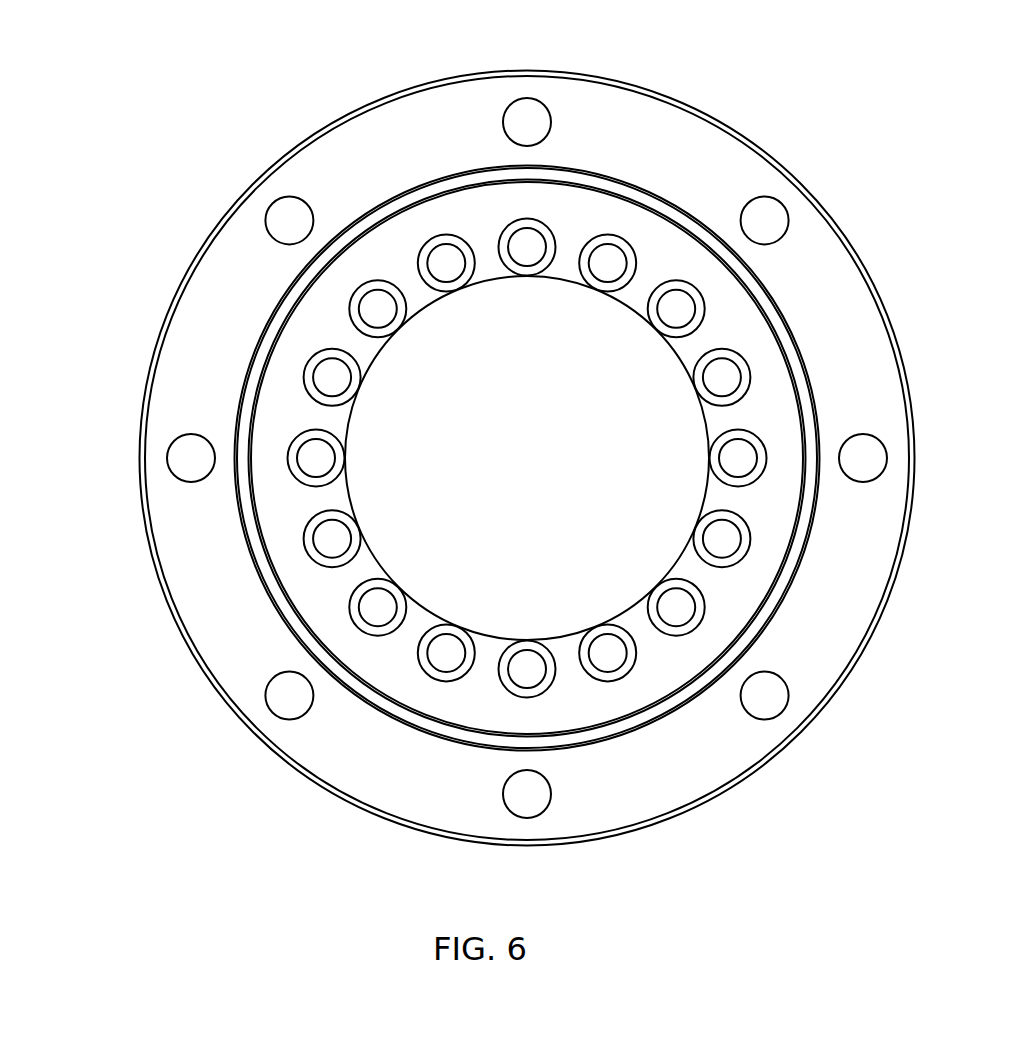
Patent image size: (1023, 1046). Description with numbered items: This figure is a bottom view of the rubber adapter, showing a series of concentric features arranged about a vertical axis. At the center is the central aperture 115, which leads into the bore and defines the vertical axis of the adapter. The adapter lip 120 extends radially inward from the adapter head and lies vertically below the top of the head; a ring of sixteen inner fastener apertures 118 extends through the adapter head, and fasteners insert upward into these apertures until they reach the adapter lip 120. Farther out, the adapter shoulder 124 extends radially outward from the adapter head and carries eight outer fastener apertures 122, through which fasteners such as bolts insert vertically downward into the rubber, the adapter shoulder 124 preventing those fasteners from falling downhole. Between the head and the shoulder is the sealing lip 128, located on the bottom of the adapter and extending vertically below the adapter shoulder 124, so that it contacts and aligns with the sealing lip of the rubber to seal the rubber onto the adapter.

The central aperture 115 is at (455, 382).
The inner fastener apertures 118 is at (723, 378).
The adapter lip 120 is at (763, 411).
The outer fastener apertures 122 is at (766, 218).
The adapter shoulder 124 is at (675, 153).
The sealing lip 128 is at (787, 582).